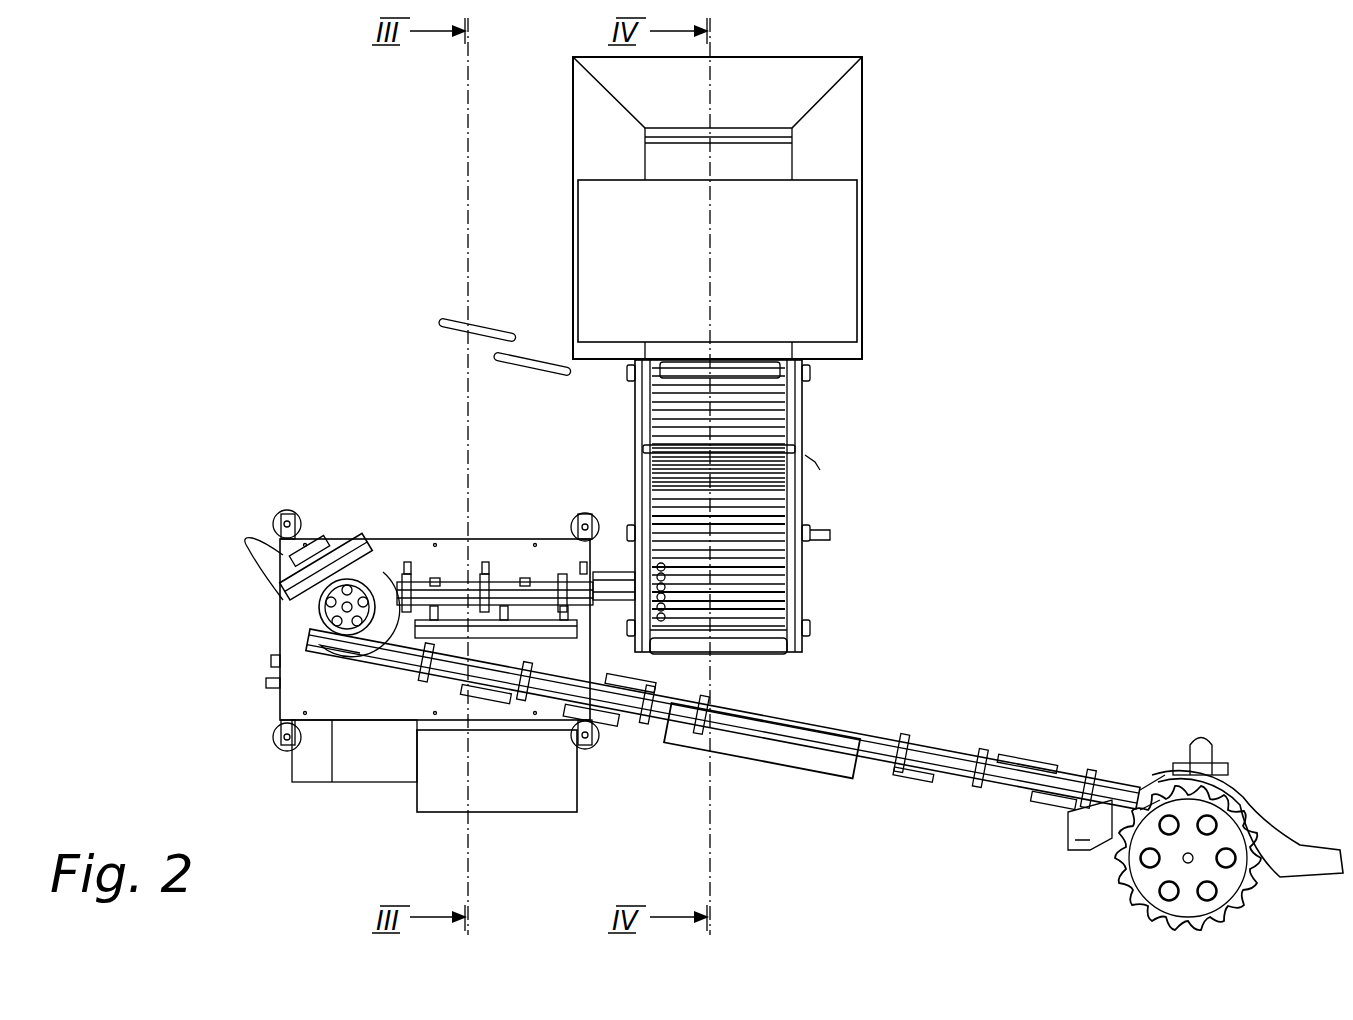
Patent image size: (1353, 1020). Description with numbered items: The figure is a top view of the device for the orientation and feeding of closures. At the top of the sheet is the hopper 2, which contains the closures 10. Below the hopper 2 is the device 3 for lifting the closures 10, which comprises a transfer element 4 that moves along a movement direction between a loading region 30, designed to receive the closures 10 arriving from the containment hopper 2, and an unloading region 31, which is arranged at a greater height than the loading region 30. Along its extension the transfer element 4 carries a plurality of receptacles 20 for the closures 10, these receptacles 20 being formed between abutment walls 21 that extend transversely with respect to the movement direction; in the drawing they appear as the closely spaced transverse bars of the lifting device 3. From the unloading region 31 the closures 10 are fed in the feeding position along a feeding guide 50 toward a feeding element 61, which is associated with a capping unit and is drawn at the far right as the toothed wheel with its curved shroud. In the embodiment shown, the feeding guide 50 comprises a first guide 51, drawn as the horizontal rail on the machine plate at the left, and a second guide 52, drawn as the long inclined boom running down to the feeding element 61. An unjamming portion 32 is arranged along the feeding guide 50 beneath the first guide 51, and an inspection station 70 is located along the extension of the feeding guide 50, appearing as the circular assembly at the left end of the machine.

The hopper 2 is at (875, 313).
The loading region 30 is at (834, 373).
The device for lifting the closures 3 is at (808, 503).
The transfer element 4 is at (775, 521).
The abutment walls 21 is at (780, 565).
The receptacles 20 is at (775, 596).
The unloading region 31 is at (748, 657).
The closures 10 is at (665, 600).
The first guide 51 is at (452, 562).
The unjamming portion 32 is at (500, 590).
The feeding guide 50 is at (540, 572).
The second guide 52 is at (655, 718).
The inspection station 70 is at (282, 597).
The feeding element 61 is at (1275, 782).